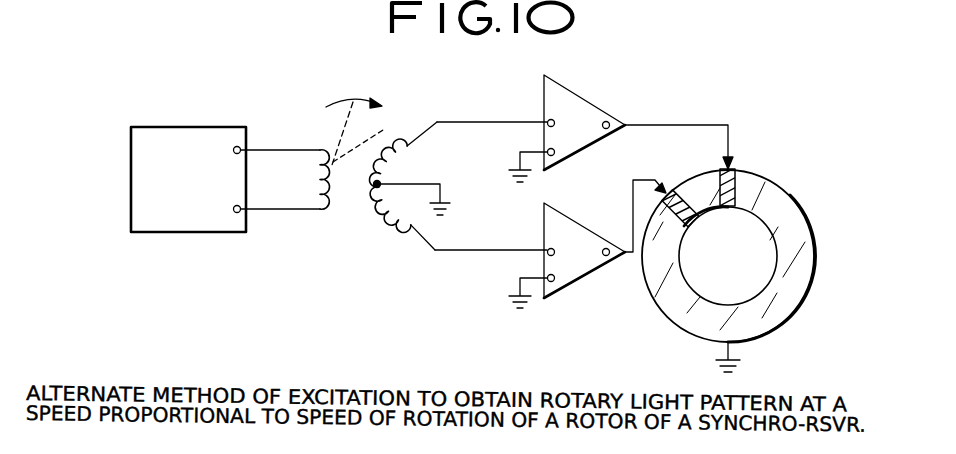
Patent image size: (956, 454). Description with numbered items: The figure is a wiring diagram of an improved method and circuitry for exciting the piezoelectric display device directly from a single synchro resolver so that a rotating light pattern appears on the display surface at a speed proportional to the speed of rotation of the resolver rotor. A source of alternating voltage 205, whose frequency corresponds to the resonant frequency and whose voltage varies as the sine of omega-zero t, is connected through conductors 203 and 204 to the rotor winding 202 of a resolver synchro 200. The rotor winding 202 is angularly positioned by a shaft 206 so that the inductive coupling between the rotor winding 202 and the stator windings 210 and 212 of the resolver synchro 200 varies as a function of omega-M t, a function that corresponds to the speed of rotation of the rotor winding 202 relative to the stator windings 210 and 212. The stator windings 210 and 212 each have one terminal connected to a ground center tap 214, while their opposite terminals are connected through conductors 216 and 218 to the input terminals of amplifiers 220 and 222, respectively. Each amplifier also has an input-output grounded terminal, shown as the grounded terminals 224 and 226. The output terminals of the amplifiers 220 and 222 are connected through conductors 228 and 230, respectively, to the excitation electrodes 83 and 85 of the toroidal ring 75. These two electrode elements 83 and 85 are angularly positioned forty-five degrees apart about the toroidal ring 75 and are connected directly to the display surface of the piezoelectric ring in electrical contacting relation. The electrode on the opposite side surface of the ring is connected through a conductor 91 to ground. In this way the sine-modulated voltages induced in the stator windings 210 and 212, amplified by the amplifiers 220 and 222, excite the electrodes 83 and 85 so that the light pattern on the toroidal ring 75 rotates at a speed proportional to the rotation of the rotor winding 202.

The source of alternating voltage 205 is at (193, 124).
The conductor 203 is at (303, 143).
The conductor 204 is at (268, 213).
The rotor winding 202 is at (311, 180).
The shaft 206 is at (351, 119).
The resolver synchro 200 is at (406, 125).
The stator winding 210 is at (412, 149).
The stator winding 212 is at (396, 220).
The ground center tap 214 is at (380, 184).
The conductor 216 is at (498, 112).
The conductor 218 is at (454, 245).
The amplifier 220 is at (602, 71).
The amplifier 222 is at (586, 214).
The input-output grounded terminal 224 is at (537, 144).
The input-output grounded terminal 226 is at (529, 273).
The conductor 228 is at (702, 119).
The conductor 230 is at (627, 201).
The toroidal ring 75 is at (829, 206).
The electrode element 83 is at (736, 190).
The electrode element 85 is at (699, 215).
The conductor 91 is at (732, 352).